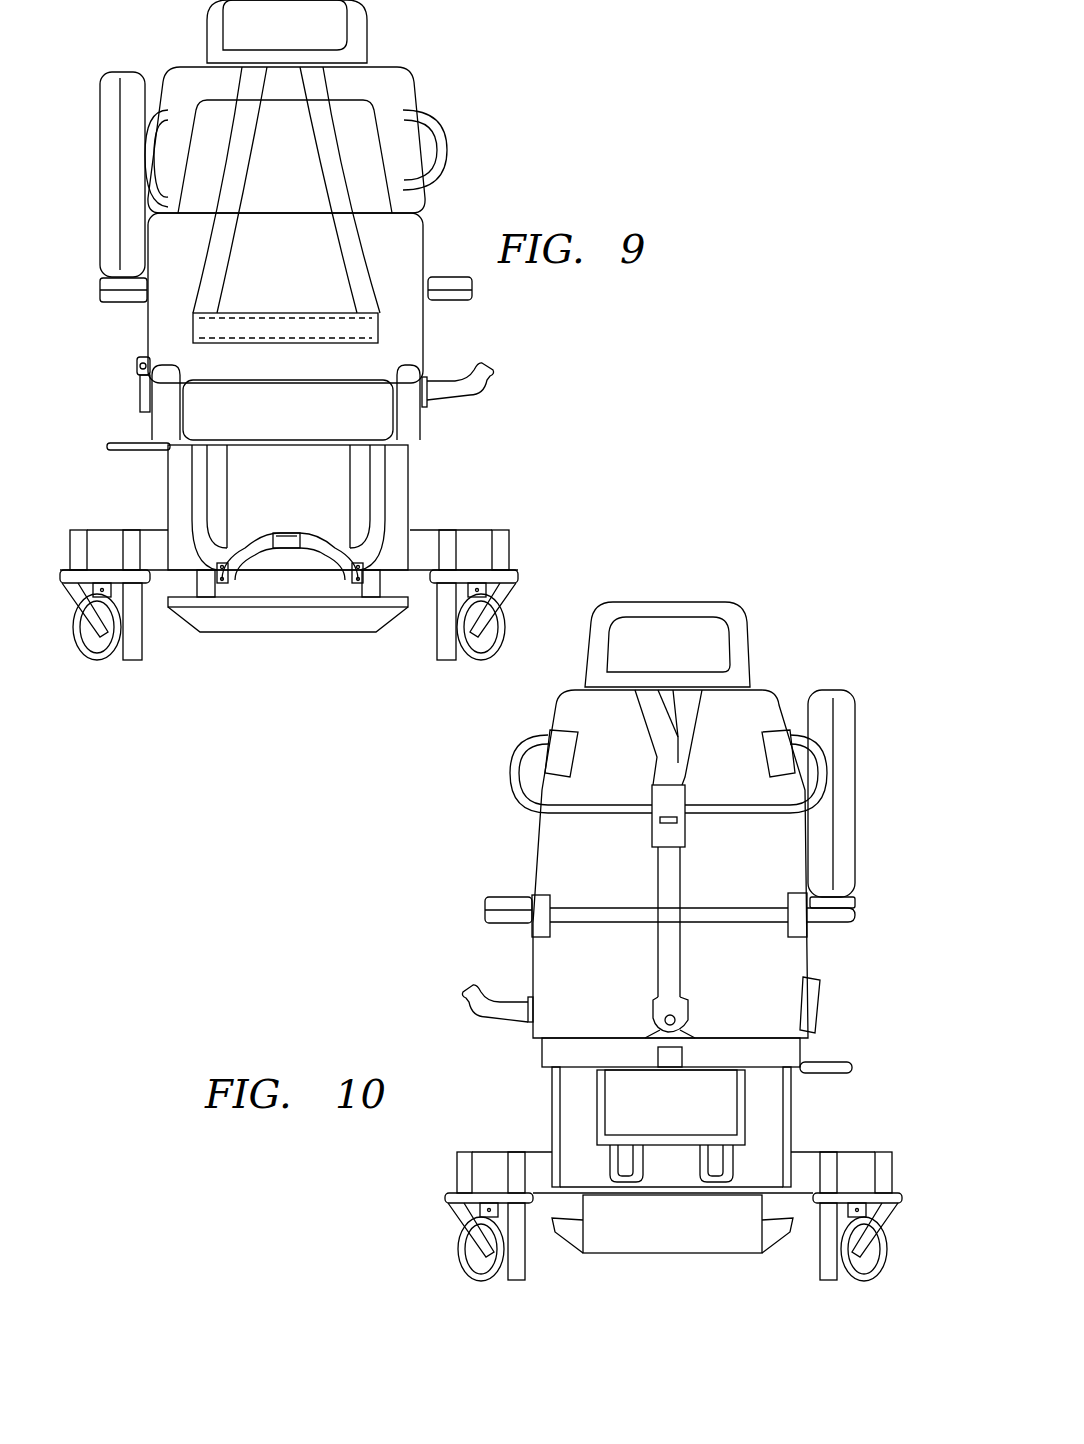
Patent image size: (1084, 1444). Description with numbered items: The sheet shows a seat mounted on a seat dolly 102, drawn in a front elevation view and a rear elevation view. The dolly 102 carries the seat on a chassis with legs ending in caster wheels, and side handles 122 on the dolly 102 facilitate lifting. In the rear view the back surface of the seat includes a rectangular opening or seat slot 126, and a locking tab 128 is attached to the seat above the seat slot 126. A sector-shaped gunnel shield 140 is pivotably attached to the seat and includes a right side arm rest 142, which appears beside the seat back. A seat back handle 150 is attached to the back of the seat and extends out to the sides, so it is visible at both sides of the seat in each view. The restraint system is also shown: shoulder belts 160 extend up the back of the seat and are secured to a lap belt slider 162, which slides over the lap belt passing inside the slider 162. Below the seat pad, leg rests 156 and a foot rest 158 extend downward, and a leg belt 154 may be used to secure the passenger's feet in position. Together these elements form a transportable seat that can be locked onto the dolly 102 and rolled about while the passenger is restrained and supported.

In FIG. 9, the seat dolly 102 is at (412, 512).
In FIG. 10, the seat dolly 102 is at (550, 1102).
In FIG. 9, the side handles 122 is at (133, 452).
In FIG. 10, the seat slot 126 is at (712, 1110).
In FIG. 10, the locking tab 128 is at (672, 1060).
In FIG. 9, the gunnel shield 140 is at (118, 185).
In FIG. 10, the gunnel shield 140 is at (820, 723).
In FIG. 9, the right side arm rest 142 is at (443, 280).
In FIG. 9, the seat back handle 150 is at (432, 122).
In FIG. 10, the seat back handle 150 is at (517, 762).
In FIG. 9, the leg belt 154 is at (265, 543).
In FIG. 9, the leg rests 156 is at (360, 478).
In FIG. 9, the foot rest 158 is at (322, 620).
In FIG. 10, the foot rest 158 is at (565, 1230).
In FIG. 9, the shoulder belts 160 is at (357, 250).
In FIG. 10, the shoulder belts 160 is at (665, 750).
In FIG. 9, the lap belt slider 162 is at (358, 328).